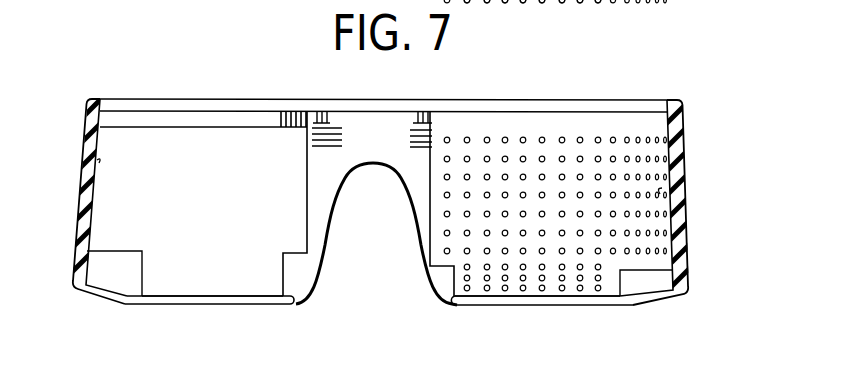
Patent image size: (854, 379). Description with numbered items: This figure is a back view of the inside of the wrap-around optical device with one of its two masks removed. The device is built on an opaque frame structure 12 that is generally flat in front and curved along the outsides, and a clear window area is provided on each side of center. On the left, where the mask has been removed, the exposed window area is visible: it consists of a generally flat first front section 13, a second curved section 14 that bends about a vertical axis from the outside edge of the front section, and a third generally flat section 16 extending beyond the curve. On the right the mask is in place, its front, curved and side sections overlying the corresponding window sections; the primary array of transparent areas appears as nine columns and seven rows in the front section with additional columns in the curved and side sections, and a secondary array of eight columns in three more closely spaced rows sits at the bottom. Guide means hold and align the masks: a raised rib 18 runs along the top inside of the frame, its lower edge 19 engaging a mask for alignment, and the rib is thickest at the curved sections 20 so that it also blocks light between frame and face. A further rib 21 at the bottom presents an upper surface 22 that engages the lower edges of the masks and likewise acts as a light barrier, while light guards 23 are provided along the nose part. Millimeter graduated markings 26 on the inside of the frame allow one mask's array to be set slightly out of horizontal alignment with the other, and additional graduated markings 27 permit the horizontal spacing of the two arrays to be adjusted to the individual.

The frame structure 12 is at (413, 155).
The first front section 13 is at (226, 215).
The second curved section 14 is at (123, 205).
The third generally flat section 16 is at (97, 160).
The raised rib 18 is at (422, 99).
The lower edge 19 is at (267, 116).
The curved sections 20 is at (124, 103).
The further rib 21 is at (173, 297).
The upper surface 22 is at (231, 294).
The light guards 23 is at (330, 165).
The millimeter graduated markings 26 is at (408, 139).
The additional graduated markings 27 is at (411, 121).